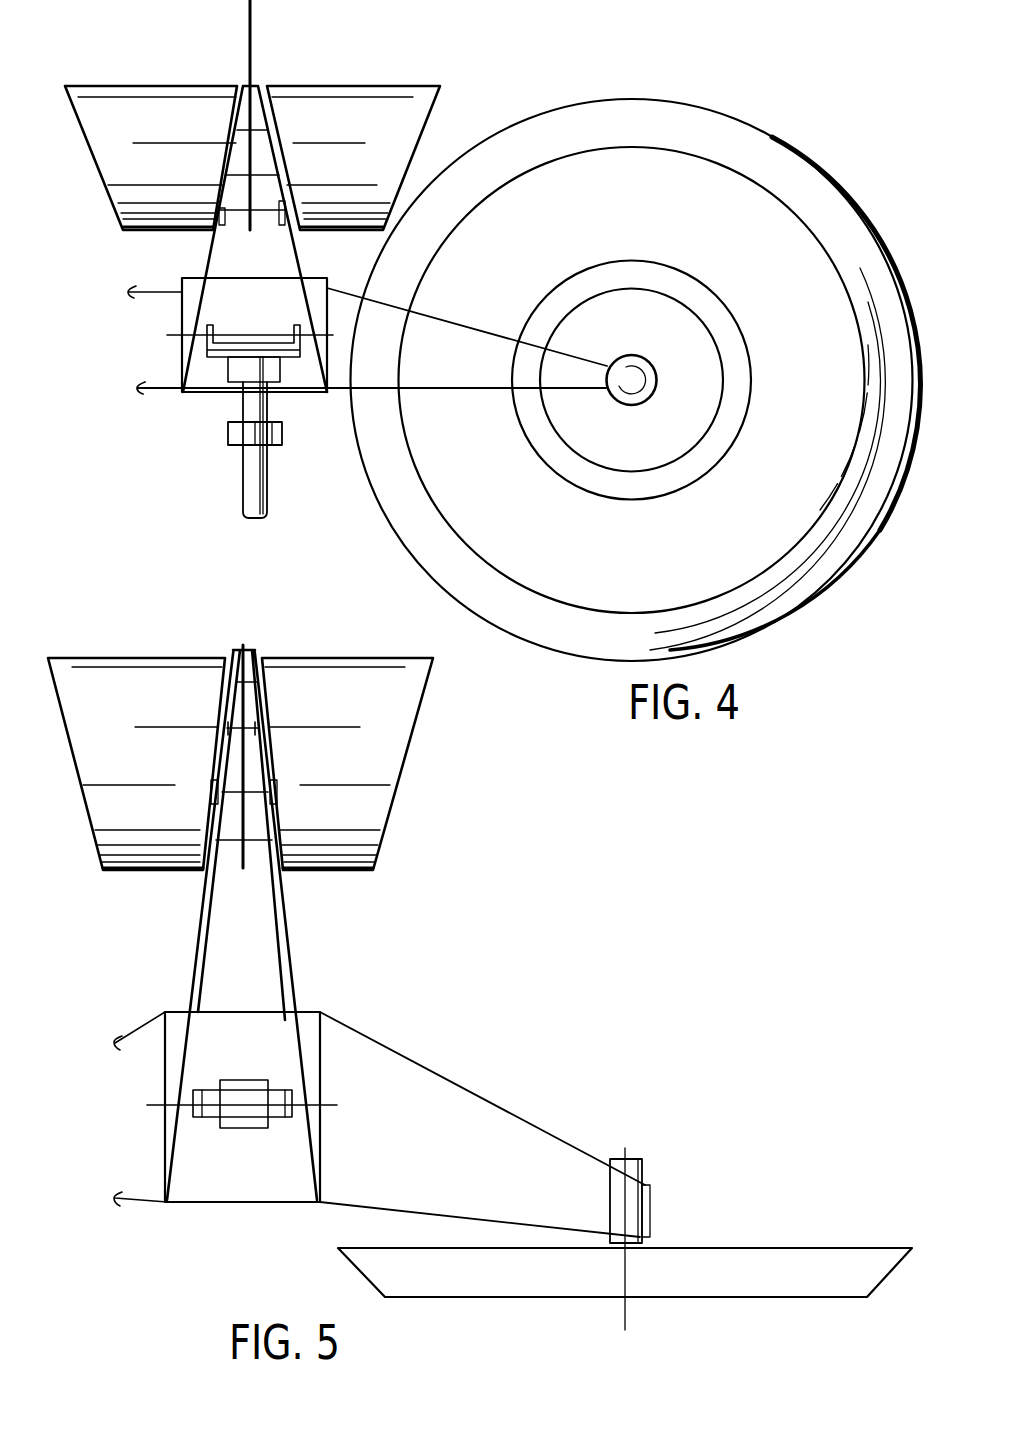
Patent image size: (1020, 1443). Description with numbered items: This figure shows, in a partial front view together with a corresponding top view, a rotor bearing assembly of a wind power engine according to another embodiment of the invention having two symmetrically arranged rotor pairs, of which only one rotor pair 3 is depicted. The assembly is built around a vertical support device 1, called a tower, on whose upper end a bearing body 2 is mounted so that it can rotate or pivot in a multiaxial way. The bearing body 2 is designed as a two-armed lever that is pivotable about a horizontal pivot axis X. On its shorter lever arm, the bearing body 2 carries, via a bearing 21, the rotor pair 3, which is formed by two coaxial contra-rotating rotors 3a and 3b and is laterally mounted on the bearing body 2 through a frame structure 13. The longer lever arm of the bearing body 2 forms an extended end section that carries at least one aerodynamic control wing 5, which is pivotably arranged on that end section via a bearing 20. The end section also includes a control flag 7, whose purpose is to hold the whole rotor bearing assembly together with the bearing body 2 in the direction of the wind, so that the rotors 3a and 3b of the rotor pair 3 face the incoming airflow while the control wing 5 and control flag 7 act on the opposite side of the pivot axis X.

In FIG. 4, the vertical support device 1 is at (246, 502).
In FIG. 4, the bearing body 2 is at (190, 394).
In FIG. 4, the rotor pair 3 is at (816, 602).
In FIG. 5, the rotor pair 3 is at (858, 1248).
In FIG. 4, the rotor 3a is at (732, 182).
In FIG. 4, the rotor 3b is at (702, 355).
In FIG. 4, the aerodynamic control wing 5 is at (355, 97).
In FIG. 5, the aerodynamic control wing 5 is at (390, 770).
In FIG. 4, the control flag 7 is at (248, 36).
In FIG. 4, the frame structure 13 is at (449, 390).
In FIG. 4, the bearing 20 is at (280, 202).
In FIG. 5, the bearing 20 is at (270, 784).
In FIG. 4, the bearing 21 is at (648, 359).
In FIG. 5, the bearing 21 is at (647, 1167).
In FIG. 4, the horizontal pivot axis X is at (178, 331).